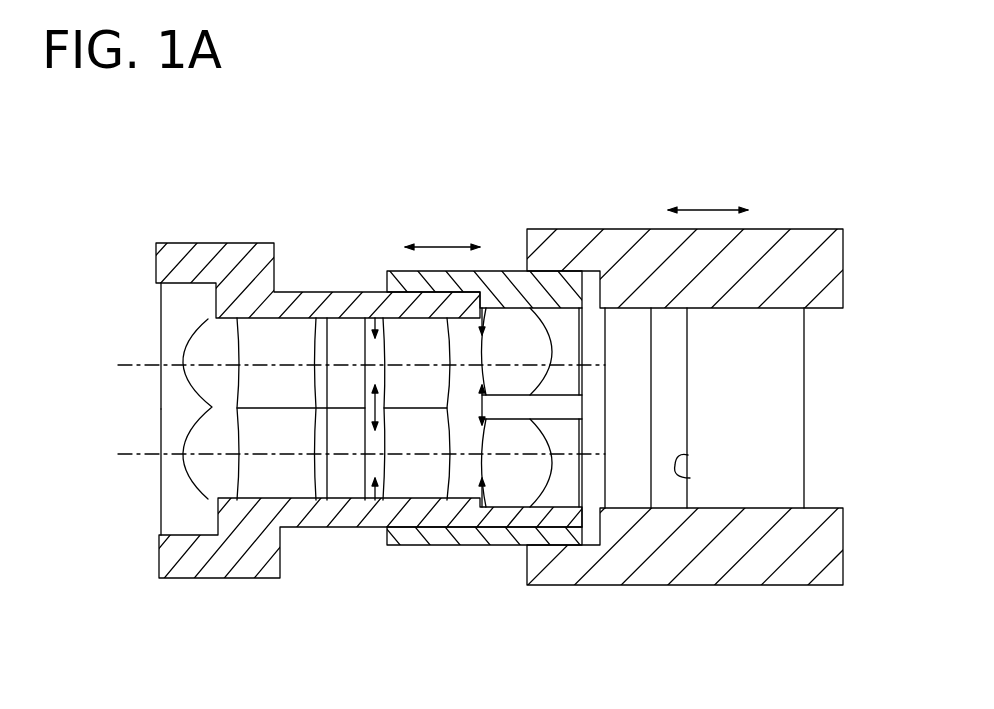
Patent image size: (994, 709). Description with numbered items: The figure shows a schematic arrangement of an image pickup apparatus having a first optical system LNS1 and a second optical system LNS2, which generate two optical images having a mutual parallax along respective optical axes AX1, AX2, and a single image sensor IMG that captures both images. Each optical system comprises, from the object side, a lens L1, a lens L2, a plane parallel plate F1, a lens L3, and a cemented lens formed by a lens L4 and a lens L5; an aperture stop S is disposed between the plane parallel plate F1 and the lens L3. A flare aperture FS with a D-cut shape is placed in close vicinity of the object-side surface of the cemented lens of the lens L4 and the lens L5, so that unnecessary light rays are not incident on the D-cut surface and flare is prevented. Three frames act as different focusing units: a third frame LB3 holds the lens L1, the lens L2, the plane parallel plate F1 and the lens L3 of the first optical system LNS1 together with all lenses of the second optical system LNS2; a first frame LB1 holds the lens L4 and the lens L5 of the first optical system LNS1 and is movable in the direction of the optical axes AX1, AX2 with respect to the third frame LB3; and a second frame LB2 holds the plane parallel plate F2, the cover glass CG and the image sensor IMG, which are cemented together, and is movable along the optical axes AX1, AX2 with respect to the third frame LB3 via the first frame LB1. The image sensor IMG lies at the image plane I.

The lens L1 is at (188, 308).
The lens L2 is at (262, 340).
The lens L3 is at (412, 338).
The lens L4 is at (515, 327).
The lens L5 is at (560, 327).
The plane parallel plate F1 is at (337, 337).
The plane parallel plate F2 is at (628, 325).
The aperture stop S is at (366, 335).
The flare aperture FS is at (442, 227).
The plane parallel plate (cover glass) CG is at (666, 318).
The image sensor IMG is at (780, 405).
The image plane I is at (690, 478).
The first frame LB1 is at (492, 270).
The second frame LB2 is at (775, 229).
The third frame LB3 is at (216, 258).
The first optical system LNS1 is at (143, 292).
The second optical system LNS2 is at (147, 512).
The optical axis AX1 is at (118, 365).
The optical axis AX2 is at (118, 454).